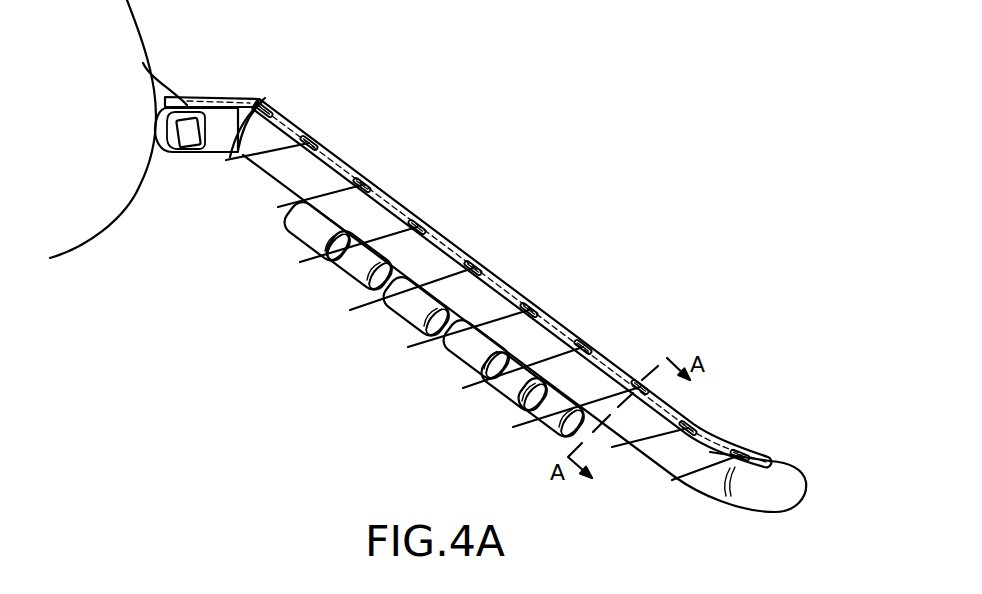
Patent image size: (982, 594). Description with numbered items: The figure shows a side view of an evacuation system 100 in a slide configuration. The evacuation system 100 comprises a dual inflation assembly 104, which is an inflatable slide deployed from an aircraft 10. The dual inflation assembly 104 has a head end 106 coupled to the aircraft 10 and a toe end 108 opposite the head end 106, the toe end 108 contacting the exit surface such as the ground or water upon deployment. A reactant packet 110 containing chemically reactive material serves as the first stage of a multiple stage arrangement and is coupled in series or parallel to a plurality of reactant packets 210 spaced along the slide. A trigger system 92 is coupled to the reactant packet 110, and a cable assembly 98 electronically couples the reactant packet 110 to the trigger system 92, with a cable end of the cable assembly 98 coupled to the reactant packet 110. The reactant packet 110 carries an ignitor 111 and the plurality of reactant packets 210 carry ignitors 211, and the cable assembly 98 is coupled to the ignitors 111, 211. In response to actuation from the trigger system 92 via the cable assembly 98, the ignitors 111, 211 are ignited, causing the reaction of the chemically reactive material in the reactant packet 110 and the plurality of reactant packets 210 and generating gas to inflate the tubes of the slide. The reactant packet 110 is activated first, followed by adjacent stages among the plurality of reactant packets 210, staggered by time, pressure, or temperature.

The aircraft 10 is at (70, 162).
The trigger system 92 is at (178, 133).
The cable assembly 98 is at (154, 71).
The evacuation system 100 is at (231, 377).
The dual inflation assembly 104 is at (300, 165).
The head end 106 is at (215, 120).
The toe end 108 is at (770, 477).
The reactant packet 110 is at (200, 100).
The ignitor 111 is at (187, 104).
The plurality of reactant packets 210 is at (275, 108).
The ignitors 211 is at (468, 323).